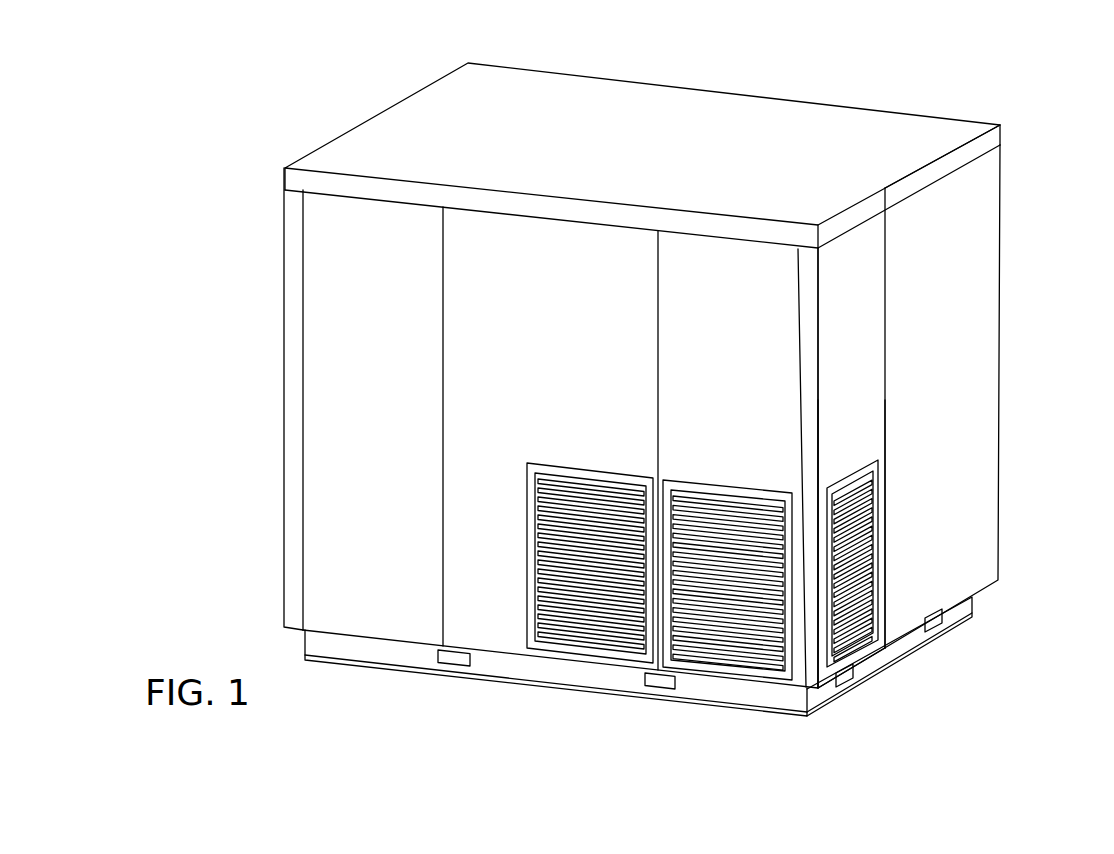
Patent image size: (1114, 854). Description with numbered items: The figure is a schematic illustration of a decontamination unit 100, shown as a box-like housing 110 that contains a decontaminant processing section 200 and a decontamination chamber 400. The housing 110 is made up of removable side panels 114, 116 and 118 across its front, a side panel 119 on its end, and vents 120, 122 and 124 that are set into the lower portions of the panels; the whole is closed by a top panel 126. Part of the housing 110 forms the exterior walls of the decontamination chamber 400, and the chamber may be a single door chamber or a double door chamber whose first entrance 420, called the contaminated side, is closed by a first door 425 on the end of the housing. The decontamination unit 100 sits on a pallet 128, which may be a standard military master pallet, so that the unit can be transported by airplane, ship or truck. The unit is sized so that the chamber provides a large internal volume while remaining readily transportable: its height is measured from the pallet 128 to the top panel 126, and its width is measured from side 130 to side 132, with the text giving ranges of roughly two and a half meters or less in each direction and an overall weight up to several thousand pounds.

The decontamination unit 100 is at (664, 394).
The housing 110 is at (664, 394).
The removable side panel 114 is at (323, 350).
The removable side panel 116 is at (467, 382).
The removable side panel 118 is at (675, 375).
The side panel 119 is at (852, 308).
The vent 120 is at (517, 533).
The vent 122 is at (743, 484).
The vent 124 is at (857, 562).
The top panel 126 is at (565, 103).
The pallet 128 is at (560, 668).
The side 130 is at (808, 303).
The side 132 is at (1008, 175).
The decontaminant processing section 200 is at (857, 430).
The decontamination chamber 400 is at (986, 386).
The first entrance 420 is at (976, 238).
The first door 425 is at (970, 298).